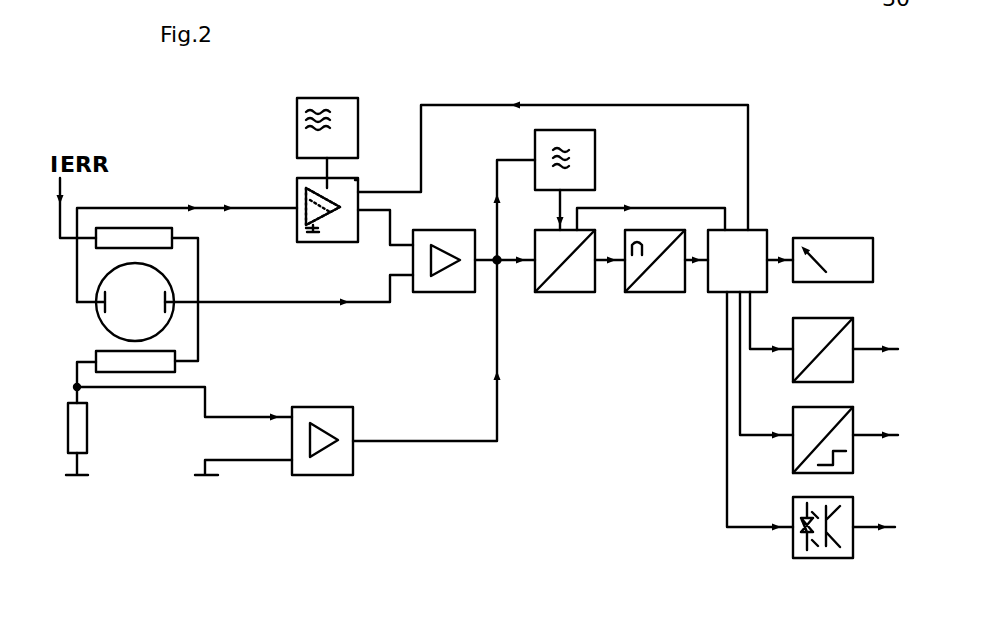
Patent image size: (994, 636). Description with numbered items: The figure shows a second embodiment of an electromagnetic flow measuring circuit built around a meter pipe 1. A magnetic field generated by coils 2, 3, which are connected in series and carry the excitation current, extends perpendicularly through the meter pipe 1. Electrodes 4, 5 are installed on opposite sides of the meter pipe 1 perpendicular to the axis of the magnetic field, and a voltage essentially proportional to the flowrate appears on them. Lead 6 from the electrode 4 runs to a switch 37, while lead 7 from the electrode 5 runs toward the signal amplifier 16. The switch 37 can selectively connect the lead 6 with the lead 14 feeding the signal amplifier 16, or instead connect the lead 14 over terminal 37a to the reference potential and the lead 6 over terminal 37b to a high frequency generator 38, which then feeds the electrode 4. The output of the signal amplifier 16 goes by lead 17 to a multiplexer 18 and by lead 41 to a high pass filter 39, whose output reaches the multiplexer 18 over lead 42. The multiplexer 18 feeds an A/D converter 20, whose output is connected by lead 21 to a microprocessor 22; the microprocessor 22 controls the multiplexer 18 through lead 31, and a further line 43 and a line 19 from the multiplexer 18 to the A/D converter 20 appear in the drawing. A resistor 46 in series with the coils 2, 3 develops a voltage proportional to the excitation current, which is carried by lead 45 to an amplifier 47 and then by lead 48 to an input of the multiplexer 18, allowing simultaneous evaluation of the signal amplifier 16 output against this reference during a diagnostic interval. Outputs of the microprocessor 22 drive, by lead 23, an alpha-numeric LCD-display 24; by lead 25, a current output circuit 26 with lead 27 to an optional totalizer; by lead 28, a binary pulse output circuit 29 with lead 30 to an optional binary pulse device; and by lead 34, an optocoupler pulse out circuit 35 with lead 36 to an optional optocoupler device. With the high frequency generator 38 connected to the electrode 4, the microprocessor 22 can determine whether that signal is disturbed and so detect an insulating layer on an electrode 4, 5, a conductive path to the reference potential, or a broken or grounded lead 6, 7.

The meter pipe 1 is at (103, 327).
The coil 2 is at (175, 230).
The coil 3 is at (163, 349).
The electrode 4 is at (97, 312).
The electrode 5 is at (168, 294).
The lead 6 is at (157, 206).
The lead 7 is at (275, 305).
The lead 14 is at (393, 215).
The signal amplifier 16 is at (451, 229).
The lead 17 is at (511, 257).
The multiplexer 18 is at (575, 293).
The multiplexer output line 19 is at (603, 263).
The A/D converter 20 is at (660, 293).
The lead 21 is at (692, 266).
The microprocessor 22 is at (760, 228).
The lead 23 is at (773, 258).
The alpha-numeric LCD-display 24 is at (836, 237).
The lead 25 is at (752, 305).
The current output circuit 26 is at (855, 326).
The lead 27 is at (868, 352).
The lead 28 is at (752, 431).
The binary pulse output circuit 29 is at (791, 462).
The lead 30 is at (860, 440).
The lead 31 is at (697, 206).
The lead 34 is at (727, 478).
The optocoupler pulse out circuit 35 is at (791, 555).
The lead 36 is at (862, 532).
The switch 37 is at (336, 244).
The terminal 37a is at (300, 234).
The terminal 37b is at (356, 181).
The high frequency generator 38 is at (357, 97).
The high pass filter 39 is at (597, 140).
The lead 41 is at (497, 168).
The lead 42 is at (563, 202).
The feedback line 43 is at (655, 103).
The lead 45 is at (173, 392).
The resistor 46 is at (88, 425).
The amplifier 47 is at (358, 419).
The lead 48 is at (488, 442).